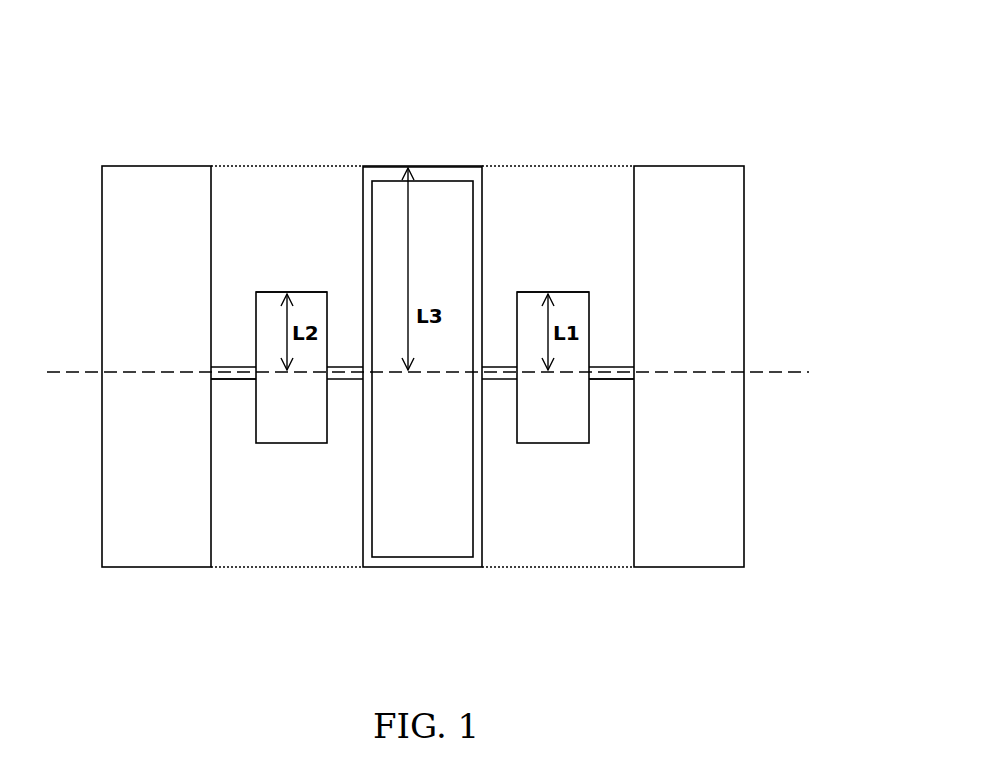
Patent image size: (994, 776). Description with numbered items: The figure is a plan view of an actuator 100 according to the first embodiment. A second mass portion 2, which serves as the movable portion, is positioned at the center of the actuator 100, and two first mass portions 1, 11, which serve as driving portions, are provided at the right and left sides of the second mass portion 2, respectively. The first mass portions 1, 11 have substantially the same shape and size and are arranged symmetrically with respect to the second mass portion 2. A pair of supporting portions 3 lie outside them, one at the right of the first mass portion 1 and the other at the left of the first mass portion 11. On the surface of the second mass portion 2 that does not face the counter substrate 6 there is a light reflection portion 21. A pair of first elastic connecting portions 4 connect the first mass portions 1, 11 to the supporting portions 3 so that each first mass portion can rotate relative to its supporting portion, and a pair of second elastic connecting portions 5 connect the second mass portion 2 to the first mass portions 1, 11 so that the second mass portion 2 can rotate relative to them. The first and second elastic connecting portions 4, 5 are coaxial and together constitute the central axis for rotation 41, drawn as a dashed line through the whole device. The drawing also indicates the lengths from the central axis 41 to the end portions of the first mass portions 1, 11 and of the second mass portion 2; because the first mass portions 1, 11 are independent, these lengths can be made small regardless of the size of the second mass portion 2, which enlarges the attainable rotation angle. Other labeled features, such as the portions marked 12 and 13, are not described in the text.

The actuator 100 is at (716, 68).
The first mass portion 1 is at (550, 428).
The first mass portion 11 is at (283, 423).
The magnet end face 12 is at (292, 291).
The core end face 13 is at (385, 165).
The second mass portion 2 is at (429, 176).
The light reflection portion 21 is at (421, 541).
The supporting portion 3 is at (118, 325).
The first elastic connecting portion 4 is at (232, 384).
The central axis for rotation 41 is at (445, 380).
The second elastic connecting portion 5 is at (352, 369).
The counter substrate 6 is at (556, 186).